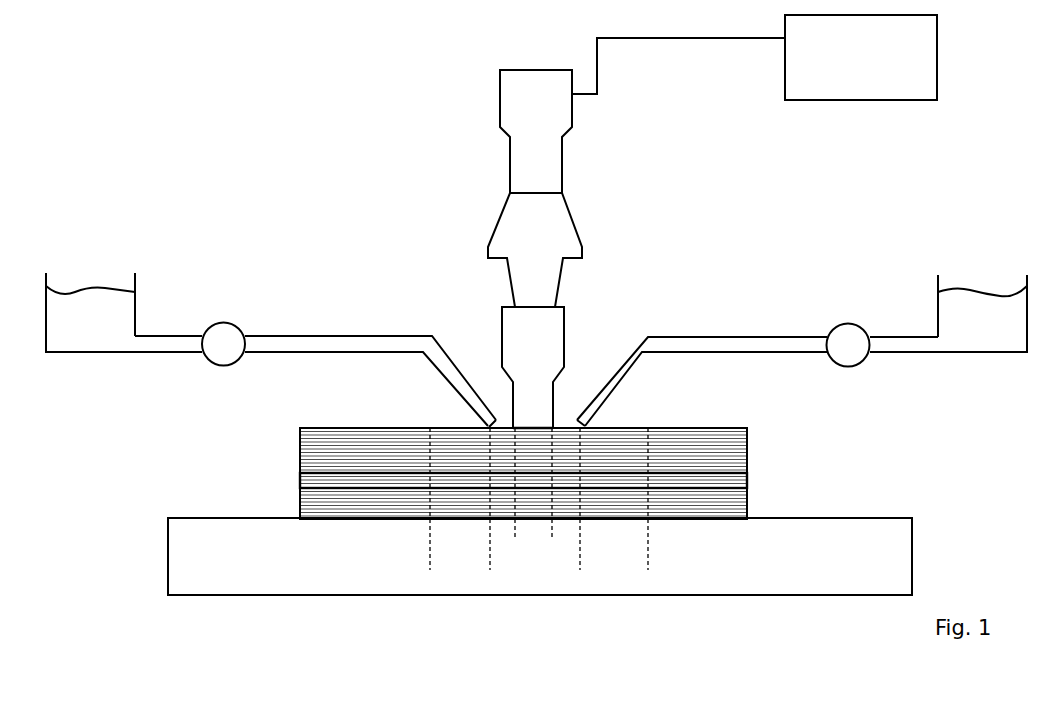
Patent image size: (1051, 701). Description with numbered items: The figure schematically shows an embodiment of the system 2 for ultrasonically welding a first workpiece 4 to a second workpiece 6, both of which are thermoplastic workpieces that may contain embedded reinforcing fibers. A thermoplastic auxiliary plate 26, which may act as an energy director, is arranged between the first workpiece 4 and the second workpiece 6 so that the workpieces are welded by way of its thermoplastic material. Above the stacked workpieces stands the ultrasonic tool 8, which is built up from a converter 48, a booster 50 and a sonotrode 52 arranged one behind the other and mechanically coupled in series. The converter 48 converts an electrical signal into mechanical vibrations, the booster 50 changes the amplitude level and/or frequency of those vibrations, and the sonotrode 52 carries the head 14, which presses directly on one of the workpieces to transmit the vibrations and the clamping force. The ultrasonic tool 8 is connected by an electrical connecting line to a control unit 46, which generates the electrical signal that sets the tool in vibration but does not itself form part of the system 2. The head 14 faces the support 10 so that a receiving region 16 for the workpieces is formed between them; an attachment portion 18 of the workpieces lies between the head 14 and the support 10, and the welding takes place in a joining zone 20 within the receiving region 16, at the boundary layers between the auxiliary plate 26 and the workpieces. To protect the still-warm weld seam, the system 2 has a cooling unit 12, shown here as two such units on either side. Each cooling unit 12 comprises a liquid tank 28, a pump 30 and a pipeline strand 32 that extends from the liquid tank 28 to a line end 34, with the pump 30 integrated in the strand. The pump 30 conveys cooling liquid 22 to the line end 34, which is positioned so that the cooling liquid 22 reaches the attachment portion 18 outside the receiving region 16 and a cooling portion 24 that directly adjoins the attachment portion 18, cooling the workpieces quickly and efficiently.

The system 2 is at (293, 155).
The first workpiece 4 is at (752, 455).
The second workpiece 6 is at (757, 505).
The ultrasonic tool 8 is at (525, 249).
The support 10 is at (900, 570).
The cooling unit 12 is at (536, 320).
The head 14 is at (555, 427).
The receiving region 16 is at (551, 530).
The attachment portion 18 is at (579, 565).
The joining zone 20 is at (542, 480).
The cooling liquid 22 is at (128, 322).
The cooling portion 24 is at (489, 538).
The auxiliary plate 26 is at (752, 480).
The liquid tank 28 is at (147, 292).
The pump 30 is at (225, 353).
The pipeline strand 32 is at (290, 360).
The line end 34 is at (491, 424).
The control unit 46 is at (754, 57).
The converter 48 is at (497, 103).
The booster 50 is at (487, 237).
The sonotrode 52 is at (498, 308).